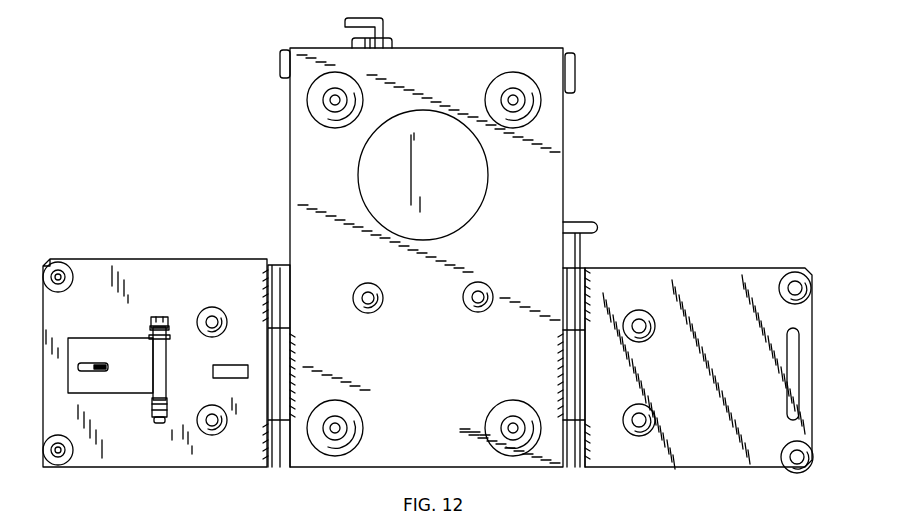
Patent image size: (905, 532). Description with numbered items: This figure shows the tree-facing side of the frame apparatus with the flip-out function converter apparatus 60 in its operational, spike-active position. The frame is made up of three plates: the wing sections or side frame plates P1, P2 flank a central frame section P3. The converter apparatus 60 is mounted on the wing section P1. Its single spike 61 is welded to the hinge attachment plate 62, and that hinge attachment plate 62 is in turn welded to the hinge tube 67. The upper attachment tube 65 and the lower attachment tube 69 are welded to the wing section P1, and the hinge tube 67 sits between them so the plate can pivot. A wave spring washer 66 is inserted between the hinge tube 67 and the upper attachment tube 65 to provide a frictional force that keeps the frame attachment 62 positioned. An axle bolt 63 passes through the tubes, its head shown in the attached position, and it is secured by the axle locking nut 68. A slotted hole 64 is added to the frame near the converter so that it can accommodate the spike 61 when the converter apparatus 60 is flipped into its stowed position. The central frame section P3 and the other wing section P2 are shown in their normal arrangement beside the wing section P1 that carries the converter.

The flip-out function converter apparatus 60 is at (97, 330).
The spike 61 is at (92, 364).
The hinge attachment plate 62 is at (88, 382).
The axle bolt 63 is at (152, 318).
The slotted hole 64 is at (237, 365).
The upper attachment tube 65 is at (166, 327).
The wave spring washer 66 is at (168, 338).
The hinge tube 67 is at (162, 368).
The axle locking nut 68 is at (158, 422).
The lower attachment tube 69 is at (167, 402).
The wing section P1 is at (132, 272).
The wing section P2 is at (643, 275).
The central frame section P3 is at (450, 58).